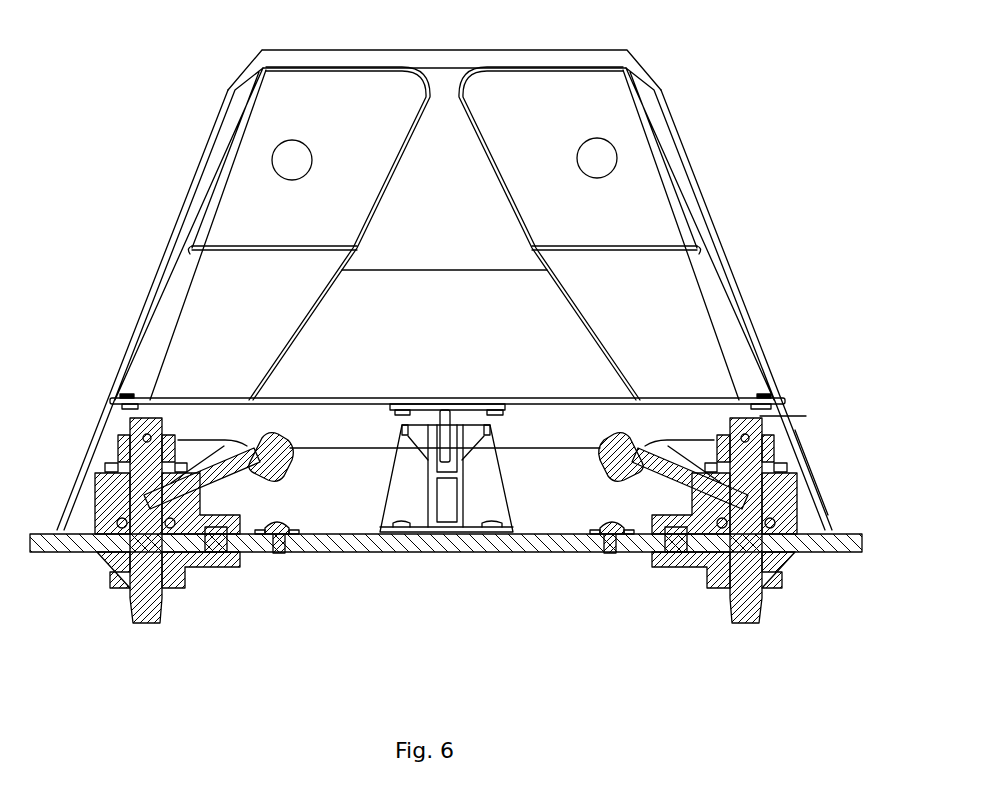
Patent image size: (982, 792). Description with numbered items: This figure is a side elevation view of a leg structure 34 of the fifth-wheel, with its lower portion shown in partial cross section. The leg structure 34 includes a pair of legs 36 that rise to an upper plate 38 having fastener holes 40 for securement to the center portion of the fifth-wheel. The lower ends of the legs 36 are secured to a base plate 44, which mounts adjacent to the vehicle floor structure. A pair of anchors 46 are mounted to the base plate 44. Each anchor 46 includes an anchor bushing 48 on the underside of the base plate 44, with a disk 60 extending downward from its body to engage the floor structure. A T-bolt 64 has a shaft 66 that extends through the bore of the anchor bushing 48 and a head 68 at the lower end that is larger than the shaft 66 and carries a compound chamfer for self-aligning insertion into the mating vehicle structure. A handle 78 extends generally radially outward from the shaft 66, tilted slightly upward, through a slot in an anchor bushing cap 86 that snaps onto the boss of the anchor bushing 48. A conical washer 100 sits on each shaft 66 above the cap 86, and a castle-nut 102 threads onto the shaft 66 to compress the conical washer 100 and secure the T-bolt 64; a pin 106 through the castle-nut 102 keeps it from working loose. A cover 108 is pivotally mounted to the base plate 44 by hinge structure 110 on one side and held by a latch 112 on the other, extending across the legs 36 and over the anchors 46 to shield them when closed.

The leg structure 34 is at (753, 63).
The legs 36 is at (300, 66).
The upper plate 38 is at (525, 47).
The fastener holes 40 is at (616, 151).
The base plate 44 is at (865, 535).
The anchors 46 is at (812, 431).
The anchor bushing 48 is at (97, 568).
The disk 60 is at (710, 582).
The T-bolt 64 is at (185, 572).
The shaft 66 is at (147, 418).
The head 68 is at (747, 622).
The handle 78 is at (670, 440).
The anchor bushing cap 86 is at (95, 497).
The conical washer 100 is at (800, 428).
The castle-nut 102 is at (117, 440).
The pin 106 is at (143, 437).
The cover 108 is at (662, 398).
The hinge structure 110 is at (303, 553).
The latch 112 is at (395, 446).